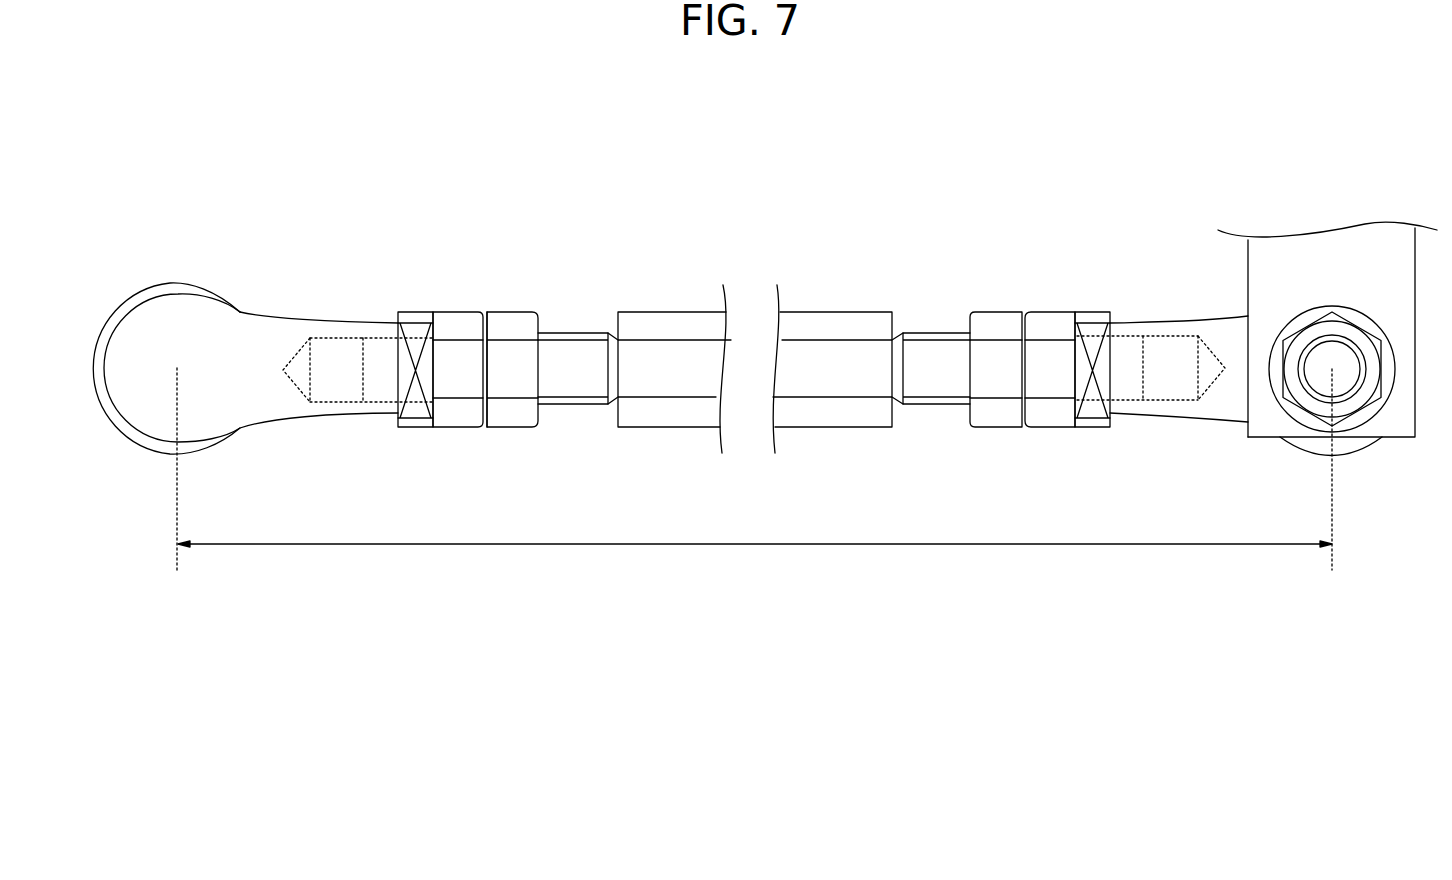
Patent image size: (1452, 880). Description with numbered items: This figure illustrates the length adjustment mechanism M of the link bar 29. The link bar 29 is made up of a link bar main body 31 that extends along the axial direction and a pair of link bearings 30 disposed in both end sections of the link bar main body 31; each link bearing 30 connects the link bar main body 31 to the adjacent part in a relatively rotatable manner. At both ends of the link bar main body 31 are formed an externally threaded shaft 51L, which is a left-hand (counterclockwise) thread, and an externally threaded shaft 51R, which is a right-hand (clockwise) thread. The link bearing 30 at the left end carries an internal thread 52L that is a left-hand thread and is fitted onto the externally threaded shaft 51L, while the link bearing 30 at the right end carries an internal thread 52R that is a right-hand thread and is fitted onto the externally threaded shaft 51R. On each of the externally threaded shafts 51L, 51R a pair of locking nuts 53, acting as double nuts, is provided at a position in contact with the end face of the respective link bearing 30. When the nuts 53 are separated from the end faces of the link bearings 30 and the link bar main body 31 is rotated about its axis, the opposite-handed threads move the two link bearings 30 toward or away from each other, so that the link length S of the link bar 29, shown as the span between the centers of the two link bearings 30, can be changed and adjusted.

The link bar 29 is at (765, 293).
The link bearing 30 is at (200, 332).
The link bar main body 31 is at (640, 325).
The externally threaded shaft 51L is at (573, 380).
The externally threaded shaft 51R is at (930, 373).
The internal thread 52L is at (350, 412).
The internal thread 52R is at (1167, 412).
The locking nut 53 is at (512, 320).
The length adjustment mechanism M is at (821, 268).
The link length S is at (754, 475).